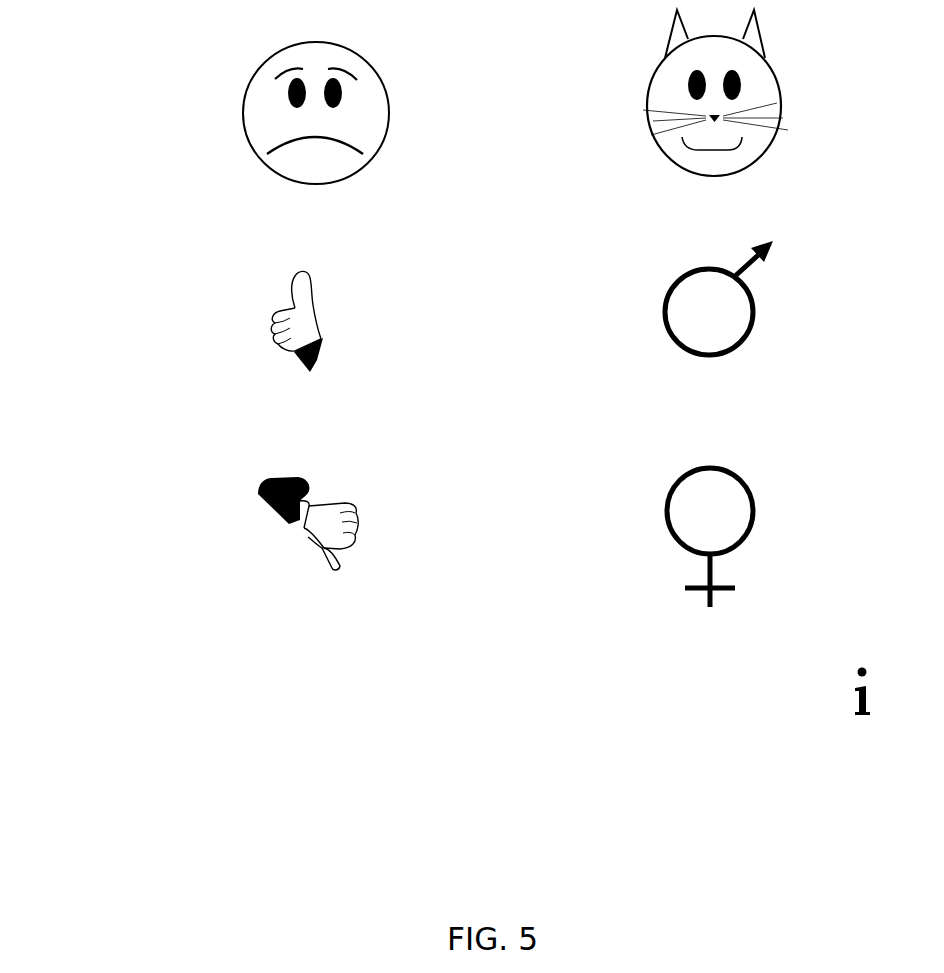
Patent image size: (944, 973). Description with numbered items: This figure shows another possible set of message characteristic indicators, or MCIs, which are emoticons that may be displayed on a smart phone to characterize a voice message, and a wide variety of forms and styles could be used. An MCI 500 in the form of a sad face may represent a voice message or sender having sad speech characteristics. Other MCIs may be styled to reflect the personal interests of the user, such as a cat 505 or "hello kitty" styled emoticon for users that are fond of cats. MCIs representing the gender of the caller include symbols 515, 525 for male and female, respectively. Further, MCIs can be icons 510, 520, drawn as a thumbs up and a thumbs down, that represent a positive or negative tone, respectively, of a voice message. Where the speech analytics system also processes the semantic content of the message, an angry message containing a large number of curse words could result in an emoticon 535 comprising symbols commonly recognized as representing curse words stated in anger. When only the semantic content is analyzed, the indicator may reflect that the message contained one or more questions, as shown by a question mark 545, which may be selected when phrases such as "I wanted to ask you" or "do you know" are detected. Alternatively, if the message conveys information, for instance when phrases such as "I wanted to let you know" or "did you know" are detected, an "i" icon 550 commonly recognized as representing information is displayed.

The MCI 500 is at (233, 88).
The cat 505 is at (635, 88).
The icon 510 is at (242, 322).
The symbol 515 is at (652, 308).
The icon 520 is at (255, 500).
The symbol 525 is at (652, 500).
The emoticon 535 is at (107, 702).
The question mark 545 is at (510, 692).
The "i" icon 550 is at (843, 698).